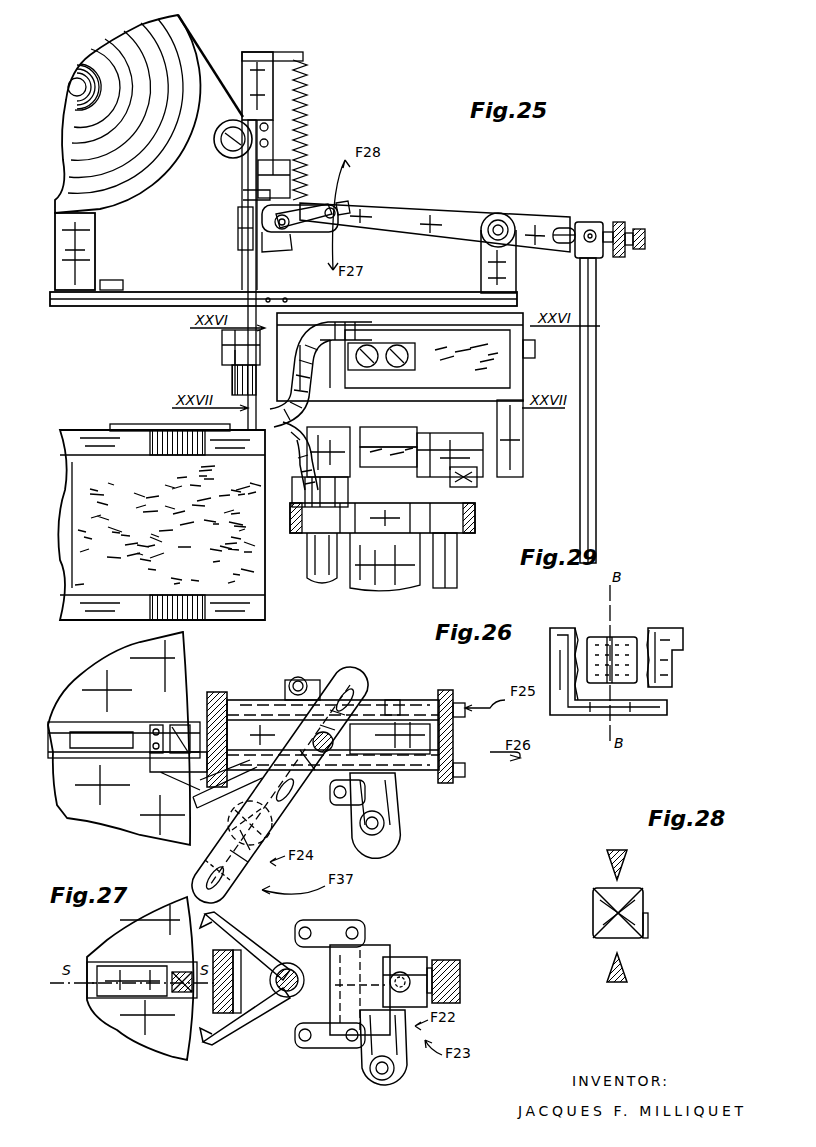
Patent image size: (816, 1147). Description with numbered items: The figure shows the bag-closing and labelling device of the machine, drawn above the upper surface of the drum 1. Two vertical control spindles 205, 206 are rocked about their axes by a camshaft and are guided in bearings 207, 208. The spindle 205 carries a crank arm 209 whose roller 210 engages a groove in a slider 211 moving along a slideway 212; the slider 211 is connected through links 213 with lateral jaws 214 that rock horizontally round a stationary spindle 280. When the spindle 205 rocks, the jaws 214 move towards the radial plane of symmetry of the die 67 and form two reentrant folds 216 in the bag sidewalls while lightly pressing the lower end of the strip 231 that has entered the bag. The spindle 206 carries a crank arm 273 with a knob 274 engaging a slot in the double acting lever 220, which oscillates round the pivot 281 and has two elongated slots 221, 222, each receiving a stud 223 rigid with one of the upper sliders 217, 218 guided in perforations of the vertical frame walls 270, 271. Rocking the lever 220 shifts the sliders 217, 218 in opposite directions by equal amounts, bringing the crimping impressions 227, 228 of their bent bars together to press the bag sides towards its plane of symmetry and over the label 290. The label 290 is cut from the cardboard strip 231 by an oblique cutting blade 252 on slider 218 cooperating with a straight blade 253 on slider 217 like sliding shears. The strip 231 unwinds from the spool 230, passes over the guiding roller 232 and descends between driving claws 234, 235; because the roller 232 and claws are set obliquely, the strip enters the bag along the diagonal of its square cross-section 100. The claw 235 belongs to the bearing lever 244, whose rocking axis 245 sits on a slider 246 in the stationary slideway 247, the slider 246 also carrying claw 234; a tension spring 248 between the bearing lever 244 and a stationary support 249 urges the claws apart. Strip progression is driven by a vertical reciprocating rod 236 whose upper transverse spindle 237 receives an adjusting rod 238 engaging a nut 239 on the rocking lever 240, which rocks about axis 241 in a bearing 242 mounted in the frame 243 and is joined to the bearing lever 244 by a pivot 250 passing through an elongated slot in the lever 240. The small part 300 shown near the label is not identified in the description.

In FIG. 26, the drum 1 is at (138, 715).
In FIG. 27, the die 67 is at (182, 995).
In FIG. 27, the square cross-section 100 is at (182, 972).
In FIG. 28, the square cross-section 100 is at (585, 915).
In FIG. 29, the square cross-section 100 is at (600, 637).
In FIG. 25, the vertical control spindle 205 is at (445, 582).
In FIG. 26, the vertical control spindle 205 is at (382, 833).
In FIG. 27, the vertical control spindle 205 is at (368, 1068).
In FIG. 25, the vertical control spindle 206 is at (315, 580).
In FIG. 26, the vertical control spindle 206 is at (228, 822).
In FIG. 25, the bearing 207 is at (470, 533).
In FIG. 25, the bearing 208 is at (295, 507).
In FIG. 26, the crank arm 209 is at (398, 805).
In FIG. 27, the crank arm 209 is at (402, 1062).
In FIG. 25, the roller 210 is at (477, 482).
In FIG. 27, the roller 210 is at (398, 960).
In FIG. 25, the slider 211 is at (465, 433).
In FIG. 27, the slider 211 is at (415, 957).
In FIG. 25, the slideway 212 is at (372, 470).
In FIG. 25, the link 213 is at (405, 430).
In FIG. 26, the link 213 is at (340, 805).
In FIG. 27, the link 213 is at (345, 920).
In FIG. 26, the lateral jaw 214 is at (215, 692).
In FIG. 27, the lateral jaw 214 is at (222, 1040).
In FIG. 28, the lateral jaw 214 is at (627, 855).
In FIG. 28, the reentrant fold 216 is at (608, 888).
In FIG. 26, the upper slider 217 is at (405, 705).
In FIG. 29, the upper slider 217 is at (672, 684).
In FIG. 25, the upper slider 218 is at (535, 356).
In FIG. 26, the upper slider 218 is at (450, 777).
In FIG. 29, the upper slider 218 is at (645, 712).
In FIG. 26, the double acting lever 220 is at (313, 738).
In FIG. 26, the elongated slot 221 is at (360, 690).
In FIG. 26, the elongated slot 222 is at (280, 797).
In FIG. 26, the stud 223 is at (347, 688).
In FIG. 29, the crimping impressions 227 is at (655, 628).
In FIG. 29, the crimping impressions 228 is at (578, 628).
In FIG. 25, the roll or spool 230 is at (80, 106).
In FIG. 25, the cardboard strip 231 is at (205, 60).
In FIG. 28, the cardboard strip 231 is at (630, 906).
In FIG. 25, the guiding roller 232 is at (220, 150).
In FIG. 25, the driving claw 234 is at (238, 222).
In FIG. 25, the driving claw 235 is at (276, 250).
In FIG. 25, the vertical reciprocating rod 236 is at (596, 350).
In FIG. 25, the transverse spindle 237 is at (598, 222).
In FIG. 25, the adjusting rod 238 is at (570, 228).
In FIG. 25, the nut 239 is at (620, 257).
In FIG. 25, the rocking lever 240 is at (425, 208).
In FIG. 25, the rocking axis 241 is at (505, 222).
In FIG. 25, the bearing 242 is at (516, 258).
In FIG. 25, the frame 243 is at (370, 292).
In FIG. 25, the bearing lever 244 is at (328, 200).
In FIG. 25, the rocking axis 245 is at (292, 226).
In FIG. 25, the slider 246 is at (253, 190).
In FIG. 25, the stationary slideway 247 is at (245, 262).
In FIG. 25, the tension spring 248 is at (308, 96).
In FIG. 25, the stationary support 249 is at (280, 52).
In FIG. 25, the pivot 250 is at (343, 204).
In FIG. 26, the oblique cutting blade 252 is at (155, 725).
In FIG. 26, the straight blade 253 is at (180, 725).
In FIG. 26, the vertical wall 270 is at (450, 692).
In FIG. 26, the vertical wall 271 is at (200, 785).
In FIG. 25, the crank arm 273 is at (290, 462).
In FIG. 26, the crank arm 273 is at (210, 812).
In FIG. 26, the knob 274 is at (226, 886).
In FIG. 27, the stationary spindle 280 is at (278, 964).
In FIG. 26, the pivot 281 is at (390, 739).
In FIG. 29, the label 290 is at (610, 637).
In FIG. 28, the strip 300 is at (648, 935).